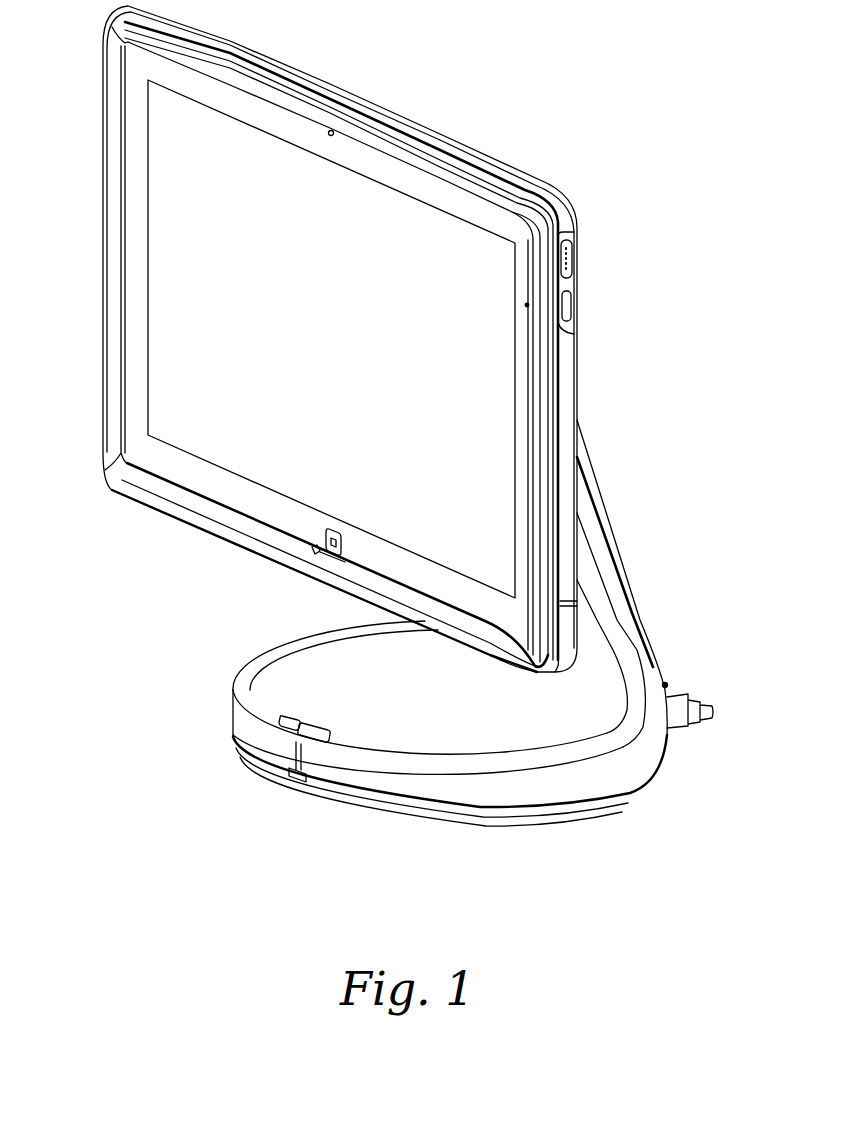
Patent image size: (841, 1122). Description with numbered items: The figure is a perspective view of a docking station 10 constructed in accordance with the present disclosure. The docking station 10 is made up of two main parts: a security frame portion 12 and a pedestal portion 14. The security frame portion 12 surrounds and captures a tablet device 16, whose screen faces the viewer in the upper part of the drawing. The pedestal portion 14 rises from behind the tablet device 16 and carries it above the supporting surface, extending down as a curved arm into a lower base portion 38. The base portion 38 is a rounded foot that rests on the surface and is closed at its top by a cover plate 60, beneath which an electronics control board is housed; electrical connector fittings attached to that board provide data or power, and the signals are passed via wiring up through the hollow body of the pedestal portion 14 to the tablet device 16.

The docking station 10 is at (652, 197).
The security frame portion 12 is at (573, 383).
The pedestal portion 14 is at (627, 582).
The tablet device 16 is at (243, 343).
The base portion 38 is at (303, 682).
The cover plate 60 is at (427, 707).